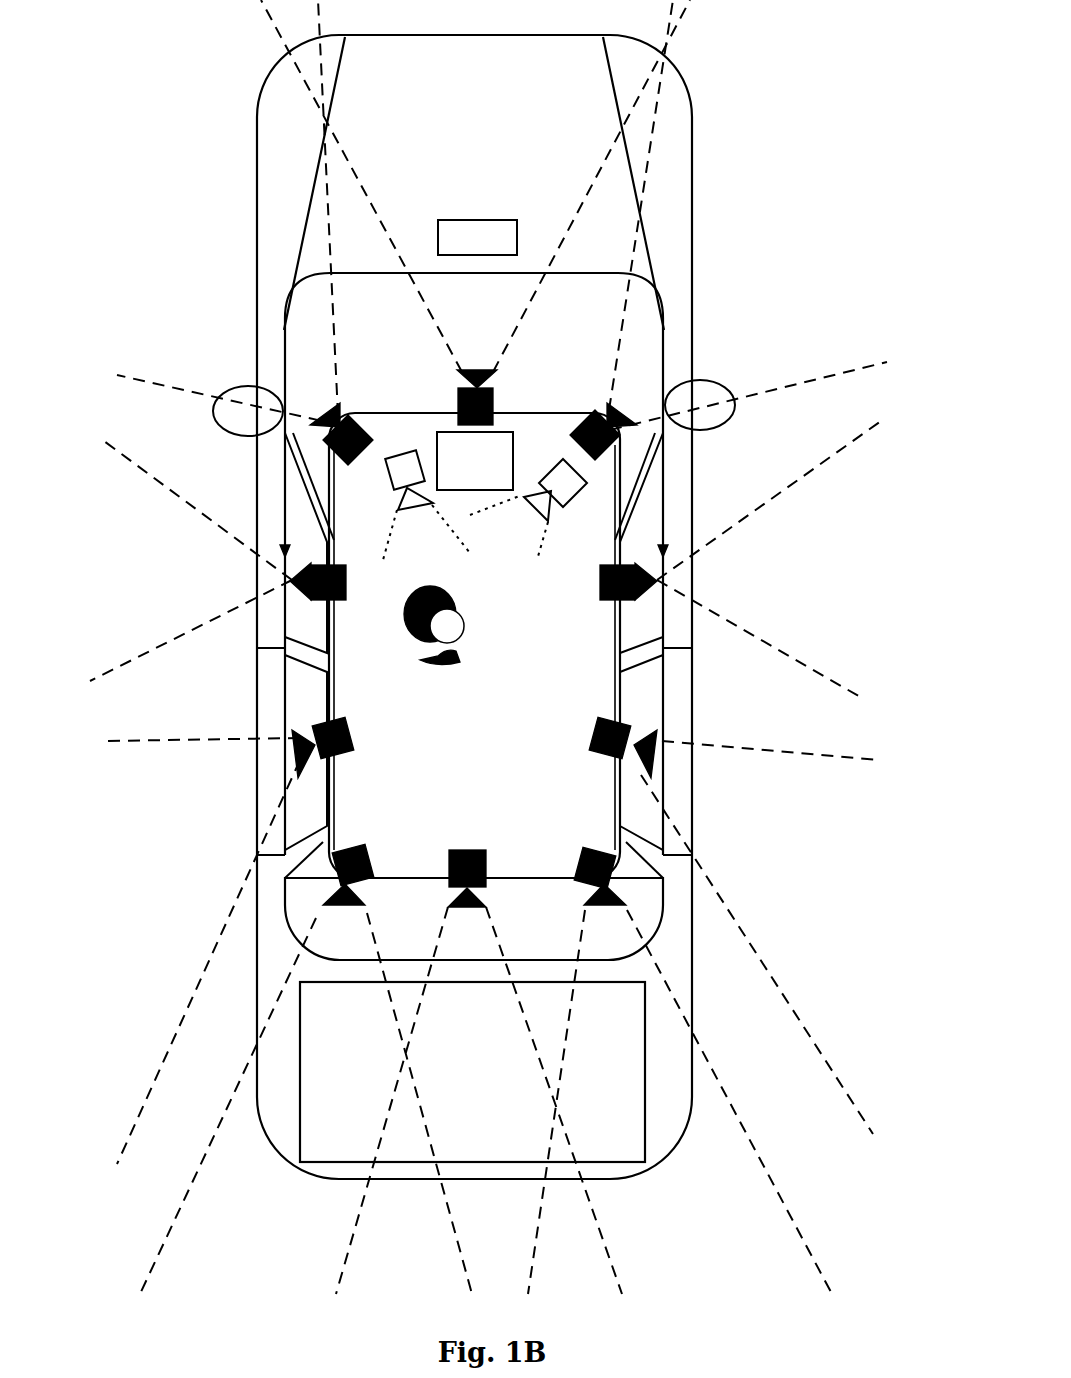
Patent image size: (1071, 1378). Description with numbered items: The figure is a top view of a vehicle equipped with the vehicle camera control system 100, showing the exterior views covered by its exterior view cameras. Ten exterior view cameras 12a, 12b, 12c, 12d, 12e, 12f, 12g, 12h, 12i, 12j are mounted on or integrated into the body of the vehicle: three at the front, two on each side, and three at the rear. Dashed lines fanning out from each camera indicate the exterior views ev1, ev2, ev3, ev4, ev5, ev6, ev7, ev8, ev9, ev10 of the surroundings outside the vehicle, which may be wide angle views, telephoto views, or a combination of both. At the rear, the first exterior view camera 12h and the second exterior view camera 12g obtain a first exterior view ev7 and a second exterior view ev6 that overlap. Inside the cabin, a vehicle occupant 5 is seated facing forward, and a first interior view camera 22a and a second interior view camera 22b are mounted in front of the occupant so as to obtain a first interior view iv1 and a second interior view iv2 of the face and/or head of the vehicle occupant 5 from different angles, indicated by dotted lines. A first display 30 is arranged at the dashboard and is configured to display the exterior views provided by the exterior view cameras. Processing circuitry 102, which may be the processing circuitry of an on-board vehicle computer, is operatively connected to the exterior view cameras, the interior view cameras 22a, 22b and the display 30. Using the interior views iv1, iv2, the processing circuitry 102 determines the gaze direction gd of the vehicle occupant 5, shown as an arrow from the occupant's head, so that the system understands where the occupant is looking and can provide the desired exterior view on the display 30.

The vehicle camera control system 100 is at (158, 150).
The processing circuitry 102 is at (477, 237).
The first display 30 is at (510, 425).
The exterior view camera 12a is at (345, 424).
The exterior view camera 12b is at (475, 384).
The exterior view camera 12c is at (601, 419).
The exterior view camera 12d is at (605, 581).
The exterior view camera 12e is at (602, 744).
The exterior view camera 12f is at (586, 866).
The second exterior view camera 12g is at (466, 864).
The first exterior view camera 12h is at (360, 863).
The exterior view camera 12i is at (343, 747).
The exterior view camera 12j is at (331, 598).
The first interior view camera 22a is at (389, 480).
The second interior view camera 22b is at (570, 490).
The vehicle occupant 5 is at (434, 644).
The gaze direction gd is at (563, 649).
The first interior view iv1 is at (426, 532).
The second interior view iv2 is at (509, 527).
The exterior view ev1 is at (475, 186).
The exterior view ev2 is at (748, 215).
The exterior view ev3 is at (769, 559).
The exterior view ev4 is at (759, 937).
The exterior view ev5 is at (659, 1100).
The second exterior view ev6 is at (472, 1072).
The first exterior view ev7 is at (306, 1100).
The exterior view ev8 is at (203, 951).
The exterior view ev9 is at (191, 561).
The exterior view ev10 is at (228, 212).